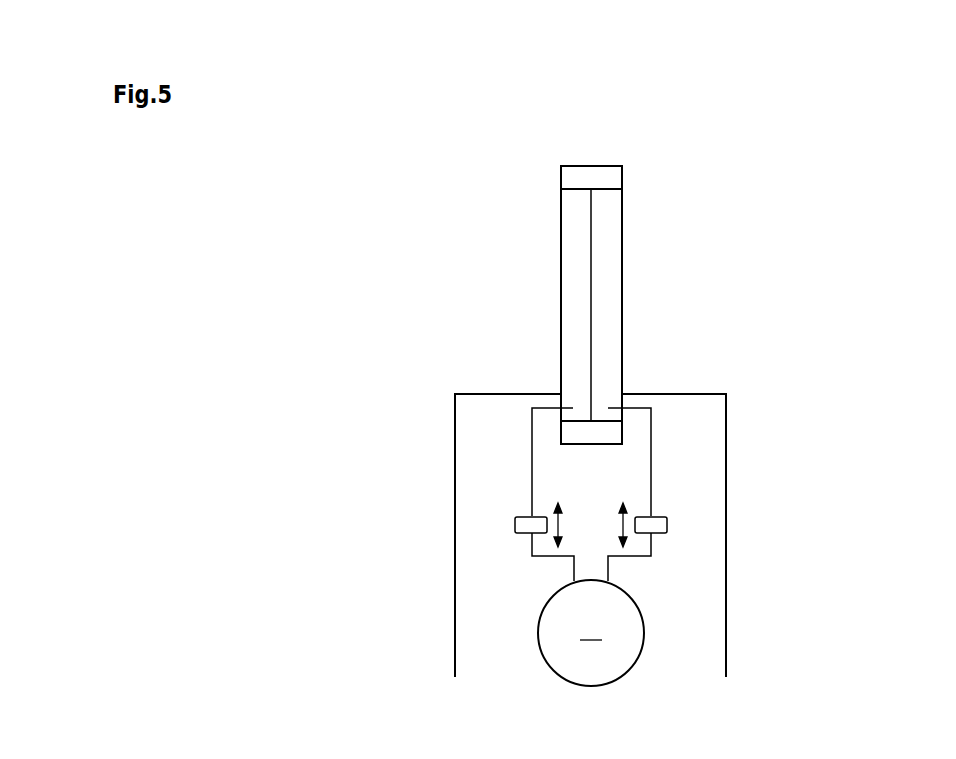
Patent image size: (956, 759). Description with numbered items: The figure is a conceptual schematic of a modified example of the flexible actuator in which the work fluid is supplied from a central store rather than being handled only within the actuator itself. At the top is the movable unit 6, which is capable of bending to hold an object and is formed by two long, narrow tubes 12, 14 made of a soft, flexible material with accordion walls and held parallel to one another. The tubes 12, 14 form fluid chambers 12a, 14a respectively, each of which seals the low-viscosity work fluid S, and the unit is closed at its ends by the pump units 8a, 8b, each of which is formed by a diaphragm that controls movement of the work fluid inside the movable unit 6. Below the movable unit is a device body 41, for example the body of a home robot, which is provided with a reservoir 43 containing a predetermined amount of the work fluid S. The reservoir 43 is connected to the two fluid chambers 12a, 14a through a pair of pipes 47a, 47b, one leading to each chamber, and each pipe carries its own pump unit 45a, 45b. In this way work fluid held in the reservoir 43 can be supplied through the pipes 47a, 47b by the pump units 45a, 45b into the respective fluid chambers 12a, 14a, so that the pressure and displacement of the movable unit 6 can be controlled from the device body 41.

The movable unit 6 is at (625, 277).
The pump unit 8a is at (622, 181).
The pump unit 8b is at (591, 445).
The tube 12 is at (580, 259).
The fluid chamber 12a is at (571, 330).
The tube 14 is at (602, 243).
The fluid chamber 14a is at (615, 312).
The device body 41 is at (472, 500).
The reservoir 43 is at (625, 630).
The pump unit 45a is at (522, 532).
The pump unit 45b is at (657, 533).
The pipe 47a is at (532, 458).
The pipe 47b is at (651, 458).